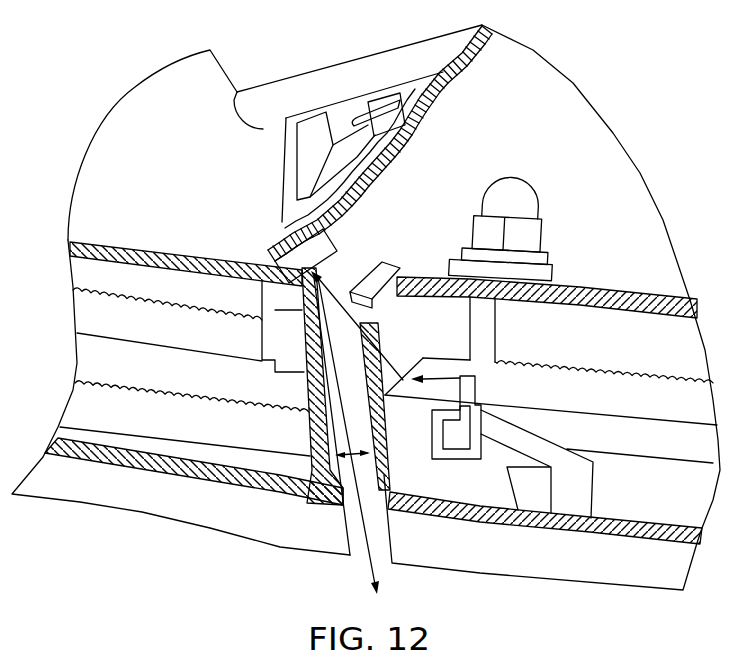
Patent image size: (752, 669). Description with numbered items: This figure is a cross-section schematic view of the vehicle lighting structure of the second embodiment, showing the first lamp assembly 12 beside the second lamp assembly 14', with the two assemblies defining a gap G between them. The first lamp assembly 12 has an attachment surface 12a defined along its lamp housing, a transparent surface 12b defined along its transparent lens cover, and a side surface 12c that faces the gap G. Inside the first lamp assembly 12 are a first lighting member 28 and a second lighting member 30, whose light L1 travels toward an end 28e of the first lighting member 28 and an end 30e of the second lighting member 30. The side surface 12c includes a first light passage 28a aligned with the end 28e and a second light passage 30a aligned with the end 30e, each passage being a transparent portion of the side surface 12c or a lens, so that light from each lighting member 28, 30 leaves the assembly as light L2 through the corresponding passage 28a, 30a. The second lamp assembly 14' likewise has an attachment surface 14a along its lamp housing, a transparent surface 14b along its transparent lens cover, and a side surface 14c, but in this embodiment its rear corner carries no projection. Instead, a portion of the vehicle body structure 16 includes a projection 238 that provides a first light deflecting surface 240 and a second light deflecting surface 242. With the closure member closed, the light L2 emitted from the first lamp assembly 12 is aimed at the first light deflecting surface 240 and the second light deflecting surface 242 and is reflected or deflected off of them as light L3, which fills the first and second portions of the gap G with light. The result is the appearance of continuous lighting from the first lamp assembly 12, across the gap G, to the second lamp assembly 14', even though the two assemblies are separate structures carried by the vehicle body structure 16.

The vehicle body structure 16 is at (173, 110).
The second lamp assembly 14' is at (181, 373).
The attachment surface 14a is at (199, 257).
The transparent surface 14b is at (165, 477).
The side surface 14c is at (278, 337).
The side surface 12c is at (308, 431).
The end of the first lighting member 28e is at (192, 396).
The end of the second lighting member 30e is at (310, 390).
The projection 238 is at (333, 230).
The first light deflecting surface 240 is at (364, 256).
The second light deflecting surface 242 is at (341, 256).
The first light passage 28a is at (406, 296).
The second light passage 30a is at (352, 326).
The first lamp assembly 12 is at (642, 280).
The attachment surface 12a is at (592, 280).
The transparent surface 12b is at (600, 537).
The first lighting member 28 is at (551, 382).
The second lighting member 30 is at (630, 400).
The light L1 is at (450, 360).
The light L2 is at (387, 357).
The light L3 is at (370, 567).
The gap G is at (353, 453).